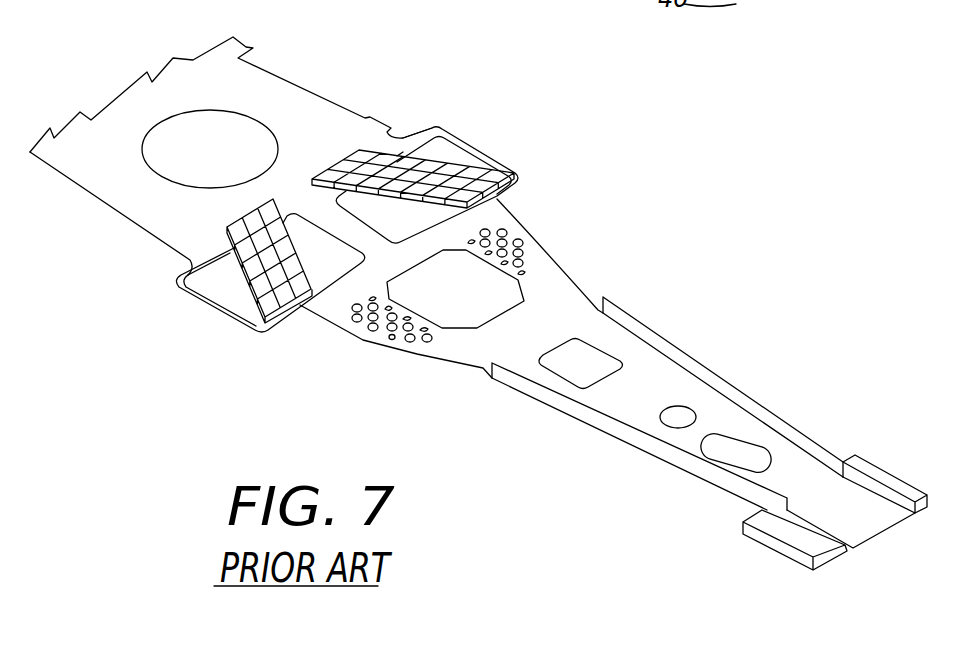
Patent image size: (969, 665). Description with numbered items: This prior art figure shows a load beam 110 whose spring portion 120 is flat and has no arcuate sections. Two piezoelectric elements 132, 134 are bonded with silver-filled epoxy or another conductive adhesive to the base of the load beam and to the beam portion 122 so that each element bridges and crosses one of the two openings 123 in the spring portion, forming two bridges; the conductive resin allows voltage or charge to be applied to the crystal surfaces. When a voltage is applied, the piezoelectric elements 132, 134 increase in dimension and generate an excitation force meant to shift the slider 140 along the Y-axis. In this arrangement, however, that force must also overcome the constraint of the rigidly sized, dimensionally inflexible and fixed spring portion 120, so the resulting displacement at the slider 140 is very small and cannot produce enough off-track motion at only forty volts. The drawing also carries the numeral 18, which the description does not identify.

The prior art head suspension assembly 110 is at (477, 496).
The load beam 18 is at (316, 118).
The first flexure tab 120 is at (240, 322).
The rail 122 is at (699, 360).
The second flexure tab 123 is at (495, 155).
The first piezoelectric element 132 is at (268, 278).
The second piezoelectric element 134 is at (450, 184).
The mounting pad 140 is at (772, 548).